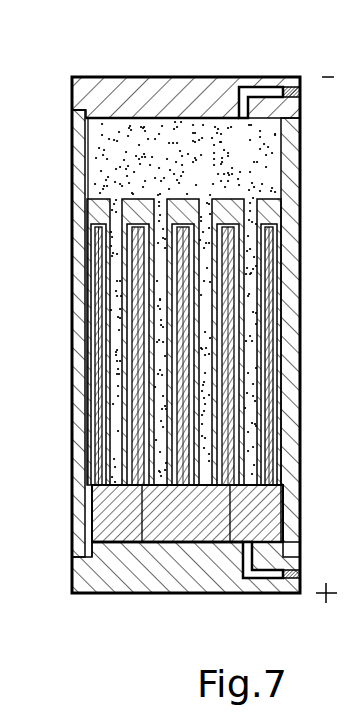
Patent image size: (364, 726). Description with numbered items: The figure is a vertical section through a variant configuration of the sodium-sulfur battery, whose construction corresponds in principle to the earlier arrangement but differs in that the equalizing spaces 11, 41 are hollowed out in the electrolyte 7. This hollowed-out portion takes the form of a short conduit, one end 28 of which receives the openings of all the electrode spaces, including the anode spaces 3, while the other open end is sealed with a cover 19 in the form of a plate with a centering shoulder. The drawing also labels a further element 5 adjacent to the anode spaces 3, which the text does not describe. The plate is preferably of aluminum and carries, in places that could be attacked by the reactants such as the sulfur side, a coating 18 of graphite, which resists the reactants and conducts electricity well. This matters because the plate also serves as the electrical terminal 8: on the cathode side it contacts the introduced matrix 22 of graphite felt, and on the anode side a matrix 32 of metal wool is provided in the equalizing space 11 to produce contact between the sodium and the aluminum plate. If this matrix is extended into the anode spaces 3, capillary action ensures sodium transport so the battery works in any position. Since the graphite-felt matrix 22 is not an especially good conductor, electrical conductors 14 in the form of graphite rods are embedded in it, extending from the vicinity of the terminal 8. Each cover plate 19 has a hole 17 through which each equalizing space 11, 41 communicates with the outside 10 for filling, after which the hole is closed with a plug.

The outside 10 is at (357, 293).
The electrical terminal 8 is at (138, 74).
The cover 19 is at (232, 77).
The hole 17 is at (275, 87).
The matrix 32 is at (97, 156).
The equalizing space 11 is at (268, 149).
The end of the conduit 28 is at (237, 198).
The anode spaces 3 is at (105, 262).
The separator 5 is at (88, 300).
The electrical conductors 14 is at (93, 345).
The electrolyte 7 is at (73, 406).
The equalizing space 41 is at (100, 513).
The matrix 22 is at (281, 507).
The coating 18 is at (115, 543).